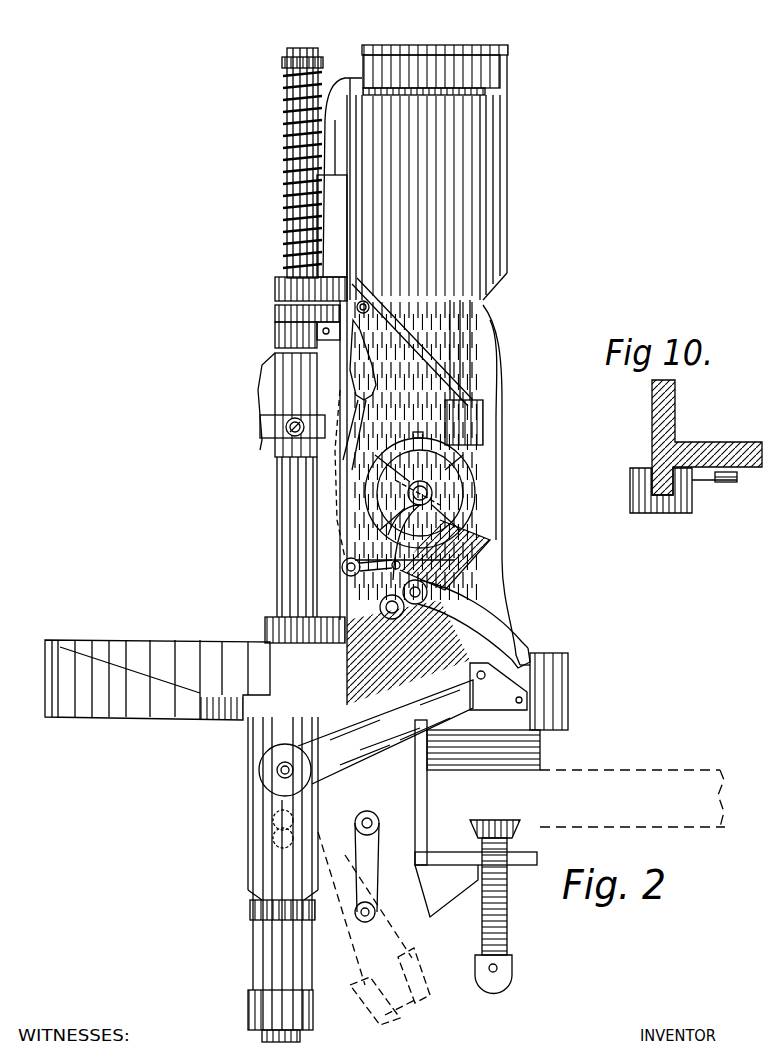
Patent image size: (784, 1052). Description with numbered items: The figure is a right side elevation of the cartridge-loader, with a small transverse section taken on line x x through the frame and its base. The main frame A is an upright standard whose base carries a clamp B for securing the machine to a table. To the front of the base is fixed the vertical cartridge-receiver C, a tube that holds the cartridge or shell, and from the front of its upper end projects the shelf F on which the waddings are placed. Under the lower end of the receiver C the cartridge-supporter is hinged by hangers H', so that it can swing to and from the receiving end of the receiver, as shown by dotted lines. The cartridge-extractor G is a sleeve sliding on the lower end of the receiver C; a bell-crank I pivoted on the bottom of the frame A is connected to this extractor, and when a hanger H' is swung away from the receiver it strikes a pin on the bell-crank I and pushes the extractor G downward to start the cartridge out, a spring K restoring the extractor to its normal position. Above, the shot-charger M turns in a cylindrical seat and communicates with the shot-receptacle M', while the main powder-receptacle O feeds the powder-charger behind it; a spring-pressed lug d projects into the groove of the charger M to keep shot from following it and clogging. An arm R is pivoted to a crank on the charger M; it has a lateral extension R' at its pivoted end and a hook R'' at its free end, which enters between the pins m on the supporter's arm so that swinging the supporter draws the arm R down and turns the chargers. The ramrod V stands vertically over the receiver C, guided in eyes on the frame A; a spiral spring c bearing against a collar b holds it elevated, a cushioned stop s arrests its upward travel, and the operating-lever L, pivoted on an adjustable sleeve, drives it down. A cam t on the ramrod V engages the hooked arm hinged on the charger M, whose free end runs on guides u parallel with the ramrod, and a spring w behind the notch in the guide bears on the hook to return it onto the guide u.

The spiral spring c is at (287, 88).
The collar b is at (323, 64).
The shot-receptacle M' is at (428, 177).
The main powder-receptacle O is at (435, 70).
The main frame A is at (503, 370).
The section line x is at (412, 342).
The cushioned stop s is at (275, 312).
The cam t is at (275, 336).
The operating-lever L is at (275, 370).
The lug d is at (295, 436).
The ramrod V is at (287, 537).
The spring w is at (357, 395).
The guides u is at (342, 560).
The shot-charger M is at (420, 506).
The arm R is at (465, 620).
The lateral extension R' is at (392, 607).
The hook R'' is at (529, 647).
The body P is at (408, 632).
The laterally-projecting pins m is at (498, 686).
The shelf F is at (157, 680).
The cartridge-receiver C is at (250, 765).
The cartridge-extractor G is at (275, 873).
The hangers H' is at (280, 1000).
The spring K is at (377, 866).
The bell-crank I is at (356, 910).
The clamp B is at (476, 857).